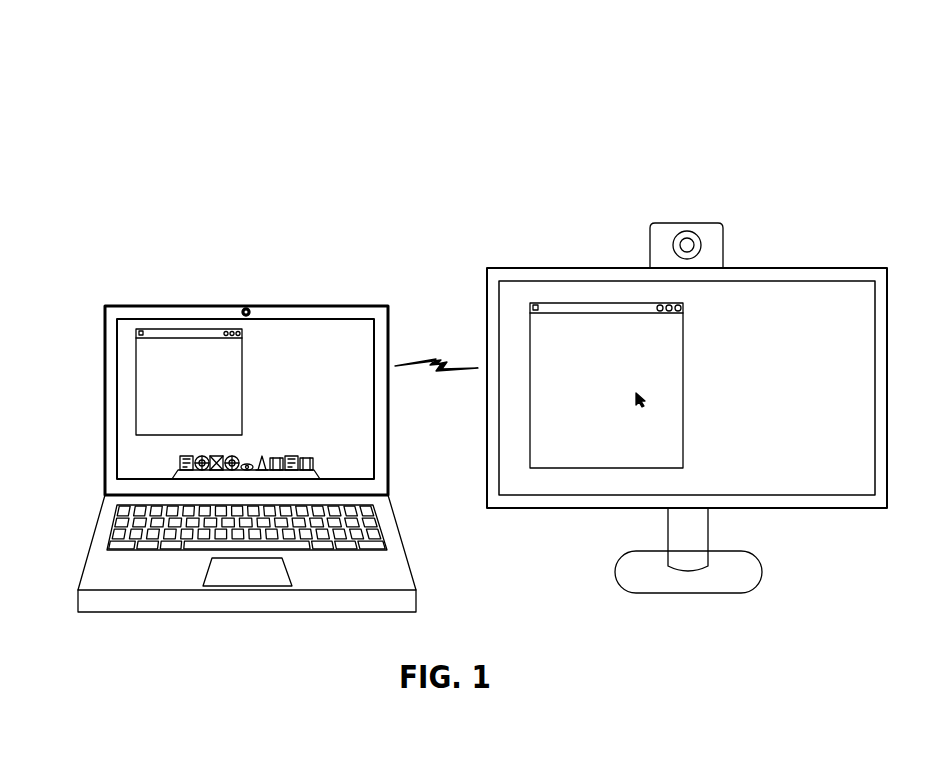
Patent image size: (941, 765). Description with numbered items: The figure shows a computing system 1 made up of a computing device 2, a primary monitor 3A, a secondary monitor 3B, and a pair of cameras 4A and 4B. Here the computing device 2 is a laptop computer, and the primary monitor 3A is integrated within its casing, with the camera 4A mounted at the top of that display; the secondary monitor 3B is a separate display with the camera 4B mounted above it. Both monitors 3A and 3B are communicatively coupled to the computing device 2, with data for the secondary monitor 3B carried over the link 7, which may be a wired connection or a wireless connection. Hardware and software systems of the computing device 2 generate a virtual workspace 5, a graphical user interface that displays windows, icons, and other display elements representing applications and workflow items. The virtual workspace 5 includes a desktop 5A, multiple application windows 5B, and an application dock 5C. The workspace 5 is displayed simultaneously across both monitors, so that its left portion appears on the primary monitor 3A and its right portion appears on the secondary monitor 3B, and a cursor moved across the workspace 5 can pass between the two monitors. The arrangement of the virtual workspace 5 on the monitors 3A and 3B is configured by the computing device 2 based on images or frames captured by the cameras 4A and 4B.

The computing system 1 is at (808, 106).
The computing device 2 is at (396, 546).
The primary monitor 3A is at (372, 372).
The secondary monitor 3B is at (830, 284).
The camera 4A is at (248, 307).
The camera 4B is at (690, 222).
The virtual workspace 5 is at (118, 392).
The desktop 5A is at (372, 426).
The application windows 5B is at (232, 394).
The application dock 5C is at (254, 466).
The link 7 is at (440, 360).